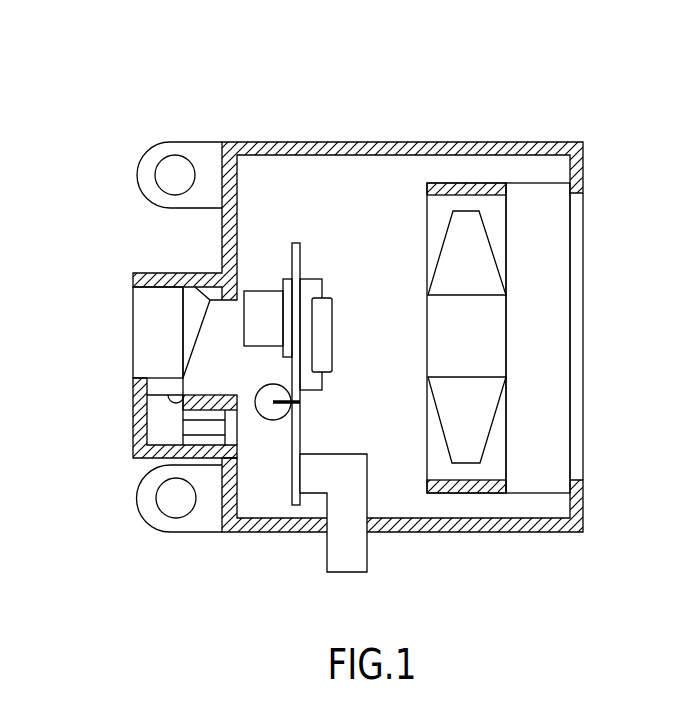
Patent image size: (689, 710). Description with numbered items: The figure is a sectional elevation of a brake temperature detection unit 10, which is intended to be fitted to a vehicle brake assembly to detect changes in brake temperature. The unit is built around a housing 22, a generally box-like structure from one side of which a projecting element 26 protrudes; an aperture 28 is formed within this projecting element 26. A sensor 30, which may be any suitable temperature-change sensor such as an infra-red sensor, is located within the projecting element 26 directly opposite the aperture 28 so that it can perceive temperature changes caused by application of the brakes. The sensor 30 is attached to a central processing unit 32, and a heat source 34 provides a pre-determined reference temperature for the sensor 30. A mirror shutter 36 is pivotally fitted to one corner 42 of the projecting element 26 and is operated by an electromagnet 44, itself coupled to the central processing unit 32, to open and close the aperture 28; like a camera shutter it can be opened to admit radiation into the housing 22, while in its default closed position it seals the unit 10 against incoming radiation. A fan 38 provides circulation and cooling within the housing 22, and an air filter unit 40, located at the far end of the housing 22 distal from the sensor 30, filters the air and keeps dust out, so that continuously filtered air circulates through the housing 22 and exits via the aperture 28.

The brake temperature detection unit 10 is at (413, 105).
The housing 22 is at (565, 533).
The projecting element 26 is at (148, 458).
The aperture 28 is at (133, 352).
The sensor 30 is at (262, 297).
The central processing unit 32 is at (333, 343).
The heat source 34 is at (277, 421).
The mirror shutter 36 is at (182, 323).
The fan 38 is at (467, 228).
The air filter unit 40 is at (547, 365).
The corner 42 is at (212, 292).
The electromagnet 44 is at (290, 442).